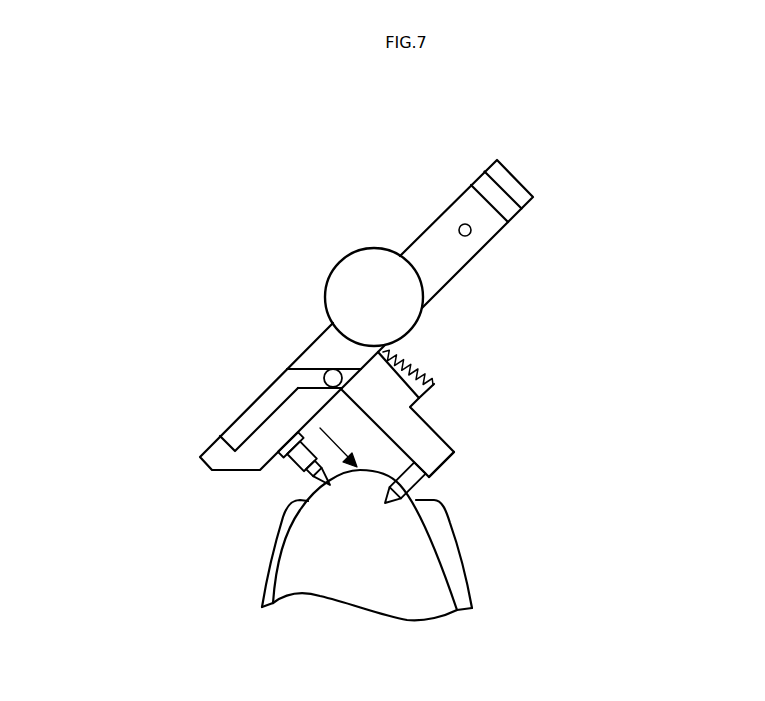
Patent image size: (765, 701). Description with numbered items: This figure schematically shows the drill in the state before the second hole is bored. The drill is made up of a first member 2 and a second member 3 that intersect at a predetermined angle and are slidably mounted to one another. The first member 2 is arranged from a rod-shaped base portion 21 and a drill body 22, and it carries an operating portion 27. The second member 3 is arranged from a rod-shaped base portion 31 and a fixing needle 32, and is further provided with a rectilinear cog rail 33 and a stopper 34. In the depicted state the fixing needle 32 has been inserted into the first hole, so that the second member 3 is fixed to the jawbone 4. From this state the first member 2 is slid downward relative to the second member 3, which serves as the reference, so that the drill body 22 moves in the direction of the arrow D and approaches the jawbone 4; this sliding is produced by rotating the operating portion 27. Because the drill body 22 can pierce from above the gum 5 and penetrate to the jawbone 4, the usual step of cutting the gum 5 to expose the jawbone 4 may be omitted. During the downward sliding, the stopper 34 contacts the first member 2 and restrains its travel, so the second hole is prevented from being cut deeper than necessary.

The first member 2 is at (203, 393).
The rod-shaped base portion 21 is at (288, 380).
The drill body 22 is at (322, 479).
The operating portion 27 is at (346, 277).
The second member 3 is at (452, 413).
The rod-shaped base portion 31 is at (440, 458).
The fixing needle 32 is at (388, 492).
The rectilinear cog rail 33 is at (415, 368).
The stopper 34 is at (435, 384).
The jawbone 4 is at (405, 573).
The gum 5 is at (280, 562).